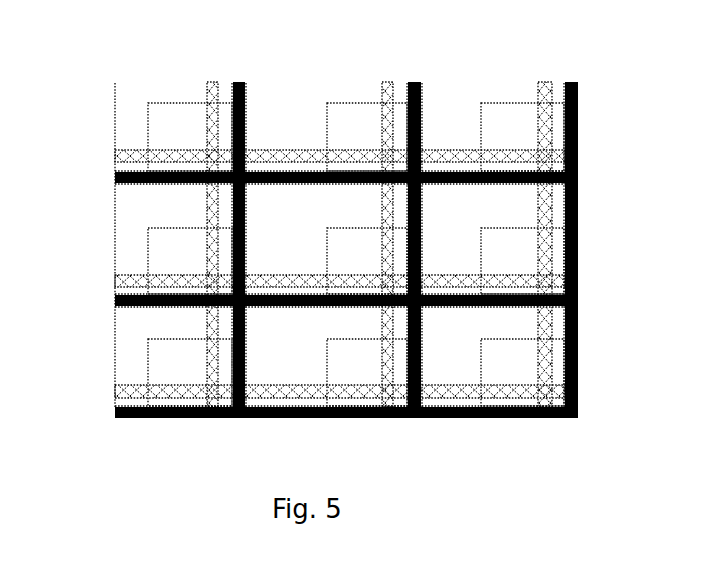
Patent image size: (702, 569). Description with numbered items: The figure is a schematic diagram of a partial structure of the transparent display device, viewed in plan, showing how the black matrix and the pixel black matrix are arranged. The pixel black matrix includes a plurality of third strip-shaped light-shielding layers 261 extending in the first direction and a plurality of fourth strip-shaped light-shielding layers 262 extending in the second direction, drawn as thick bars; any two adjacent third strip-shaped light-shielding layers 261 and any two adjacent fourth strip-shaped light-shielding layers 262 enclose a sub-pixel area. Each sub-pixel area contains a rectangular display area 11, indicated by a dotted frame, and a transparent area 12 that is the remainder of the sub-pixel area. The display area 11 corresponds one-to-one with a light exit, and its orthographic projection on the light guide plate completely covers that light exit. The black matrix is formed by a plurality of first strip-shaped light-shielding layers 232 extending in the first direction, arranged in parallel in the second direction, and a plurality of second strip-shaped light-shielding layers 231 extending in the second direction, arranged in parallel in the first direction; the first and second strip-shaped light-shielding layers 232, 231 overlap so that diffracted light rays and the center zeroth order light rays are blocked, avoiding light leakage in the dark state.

The display area 11 is at (330, 101).
The transparent area 12 is at (465, 98).
The second strip-shaped light-shielding layer 231 is at (213, 93).
The first strip-shaped light-shielding layer 232 is at (118, 278).
The third strip-shaped light-shielding layer 261 is at (512, 417).
The fourth strip-shaped light-shielding layer 262 is at (420, 87).